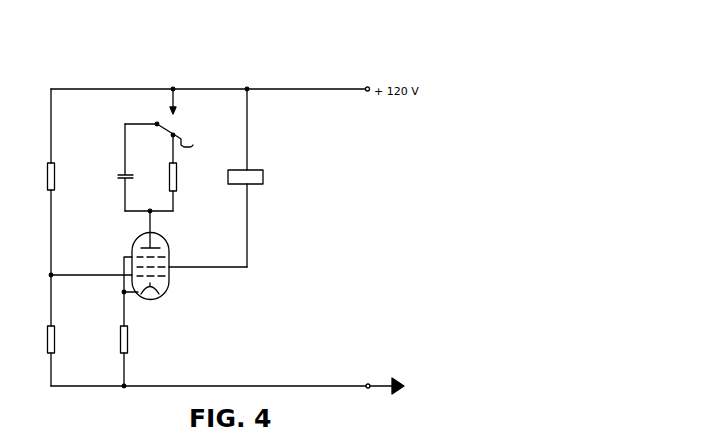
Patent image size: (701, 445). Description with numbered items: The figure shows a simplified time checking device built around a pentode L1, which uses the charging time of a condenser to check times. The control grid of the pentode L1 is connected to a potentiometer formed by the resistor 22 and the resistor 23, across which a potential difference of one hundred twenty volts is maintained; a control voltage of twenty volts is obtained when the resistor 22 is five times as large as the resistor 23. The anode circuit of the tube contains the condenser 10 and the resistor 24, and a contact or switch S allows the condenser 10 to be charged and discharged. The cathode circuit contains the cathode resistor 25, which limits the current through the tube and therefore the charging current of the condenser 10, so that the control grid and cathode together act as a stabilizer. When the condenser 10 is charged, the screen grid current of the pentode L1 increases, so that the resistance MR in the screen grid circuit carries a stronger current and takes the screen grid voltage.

The resistor 22 is at (38, 177).
The condenser 10 is at (114, 167).
The resistor 24 is at (162, 187).
The resistor 23 is at (38, 340).
The cathode resistor 25 is at (113, 339).
The resistance in the screen grid circuit MR is at (247, 177).
The pentode L1 is at (149, 255).
The switch S is at (189, 98).